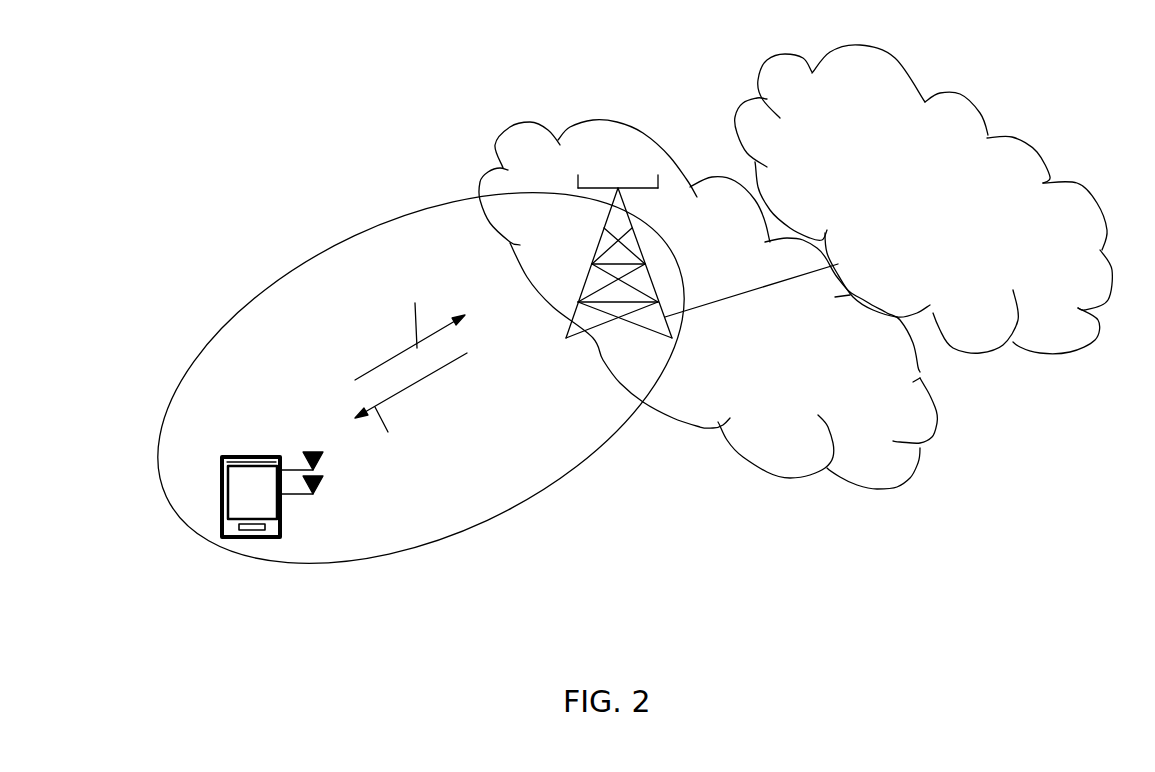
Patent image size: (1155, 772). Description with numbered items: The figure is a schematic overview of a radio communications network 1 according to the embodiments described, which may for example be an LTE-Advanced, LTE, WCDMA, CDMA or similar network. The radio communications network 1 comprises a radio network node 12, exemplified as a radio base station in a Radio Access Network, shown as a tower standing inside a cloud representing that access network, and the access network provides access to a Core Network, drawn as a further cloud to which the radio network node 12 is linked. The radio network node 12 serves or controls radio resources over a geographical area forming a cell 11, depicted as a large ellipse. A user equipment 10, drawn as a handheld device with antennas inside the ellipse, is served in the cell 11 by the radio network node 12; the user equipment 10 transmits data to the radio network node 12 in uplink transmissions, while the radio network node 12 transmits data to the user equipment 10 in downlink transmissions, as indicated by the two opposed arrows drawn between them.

The radio communications network 1 is at (262, 174).
The user equipment 10 is at (248, 507).
The cell 11 is at (485, 267).
The radio network node 12 is at (658, 320).